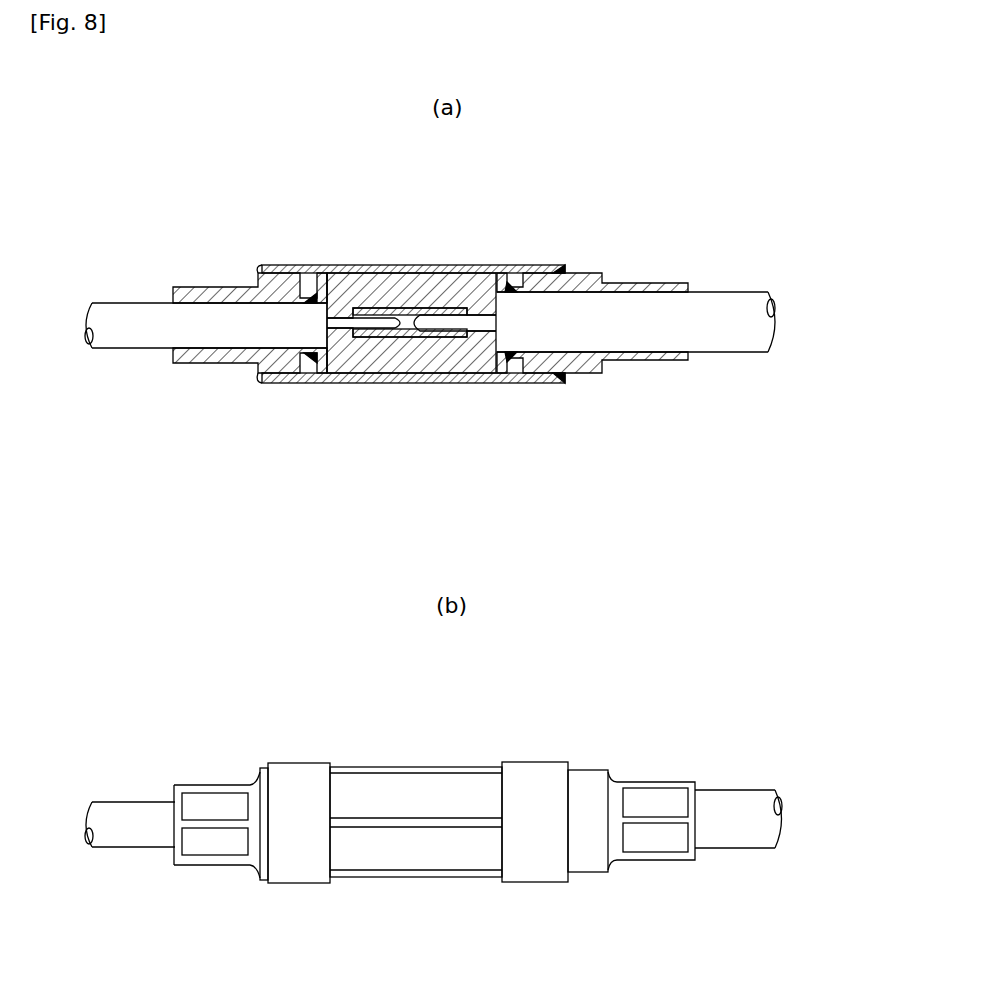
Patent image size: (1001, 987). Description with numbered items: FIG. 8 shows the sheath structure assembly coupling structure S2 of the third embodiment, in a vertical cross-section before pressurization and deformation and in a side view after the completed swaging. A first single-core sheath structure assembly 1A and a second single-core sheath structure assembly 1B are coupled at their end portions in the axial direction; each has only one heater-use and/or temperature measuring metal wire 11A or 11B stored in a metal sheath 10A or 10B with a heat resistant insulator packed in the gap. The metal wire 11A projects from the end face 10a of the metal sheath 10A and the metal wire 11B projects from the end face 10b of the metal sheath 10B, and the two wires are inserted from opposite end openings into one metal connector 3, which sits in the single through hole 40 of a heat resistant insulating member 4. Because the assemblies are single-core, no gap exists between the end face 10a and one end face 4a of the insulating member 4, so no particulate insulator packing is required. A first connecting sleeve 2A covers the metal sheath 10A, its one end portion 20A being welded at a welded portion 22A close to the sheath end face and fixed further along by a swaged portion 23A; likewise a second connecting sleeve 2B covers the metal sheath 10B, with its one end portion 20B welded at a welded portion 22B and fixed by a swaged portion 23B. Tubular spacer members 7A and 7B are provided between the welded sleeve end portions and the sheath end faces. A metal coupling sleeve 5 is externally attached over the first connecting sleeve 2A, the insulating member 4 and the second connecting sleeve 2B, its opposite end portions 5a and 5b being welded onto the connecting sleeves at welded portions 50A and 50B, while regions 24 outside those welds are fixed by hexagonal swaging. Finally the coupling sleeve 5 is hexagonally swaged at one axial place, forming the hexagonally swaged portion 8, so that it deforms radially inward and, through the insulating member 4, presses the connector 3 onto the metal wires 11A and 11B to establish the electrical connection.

The first single-core sheath structure assembly 1A is at (112, 302).
The second single-core sheath structure assembly 1B is at (737, 291).
The metal sheath 10A is at (143, 302).
The metal sheath 10B is at (712, 283).
The end face 10a is at (340, 330).
The end face 10b is at (470, 345).
The metal wire 11A is at (357, 328).
The metal wire 11B is at (428, 318).
The first connecting sleeve 2A is at (229, 366).
The second connecting sleeve 2B is at (620, 361).
The one end portion 20A is at (307, 288).
The one end portion 20B is at (525, 282).
The welded portion 22A is at (312, 282).
The welded portion 22B is at (511, 280).
The swaged portion 23A is at (197, 364).
The swaged portion 23B is at (630, 282).
The region 24 is at (197, 286).
The metal connector 3 is at (420, 340).
The heat resistant insulating member 4 is at (400, 272).
The one end face 4a is at (320, 298).
The through hole 40 is at (378, 308).
The coupling sleeve 5 is at (357, 272).
The end portion 5a is at (262, 384).
The end portion 5b is at (563, 384).
The welded portion 50A is at (258, 269).
The welded portion 50B is at (558, 266).
The tubular spacer member 7A is at (313, 360).
The tubular spacer member 7B is at (518, 360).
The hexagonally swaged portion 8 is at (425, 850).
The sheath structure assembly coupling structure S2 is at (609, 196).